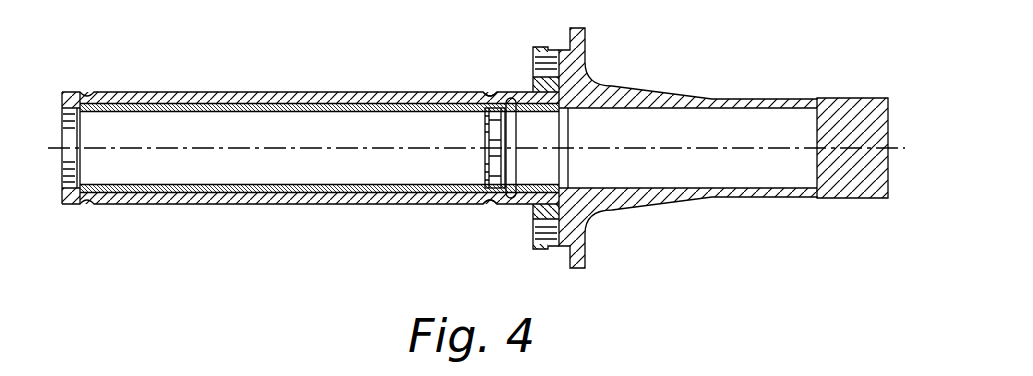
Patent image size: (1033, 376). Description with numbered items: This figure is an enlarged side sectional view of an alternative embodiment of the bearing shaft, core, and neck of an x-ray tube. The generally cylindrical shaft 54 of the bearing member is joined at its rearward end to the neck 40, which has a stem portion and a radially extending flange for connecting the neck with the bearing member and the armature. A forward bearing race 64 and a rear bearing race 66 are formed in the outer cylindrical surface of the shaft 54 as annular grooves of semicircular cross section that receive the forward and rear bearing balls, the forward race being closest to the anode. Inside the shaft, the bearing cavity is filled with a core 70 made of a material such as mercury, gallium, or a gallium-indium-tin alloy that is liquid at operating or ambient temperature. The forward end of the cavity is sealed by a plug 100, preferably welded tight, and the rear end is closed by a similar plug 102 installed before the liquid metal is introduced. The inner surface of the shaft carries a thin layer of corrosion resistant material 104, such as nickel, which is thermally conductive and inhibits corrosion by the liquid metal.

The neck 40 is at (856, 88).
The shaft 54 is at (392, 92).
The forward bearing race 64 is at (487, 92).
The rear bearing race 66 is at (91, 95).
The core 70 is at (303, 126).
The plug 100 is at (498, 170).
The plug 102 is at (70, 176).
The corrosion resistant material 104 is at (342, 176).